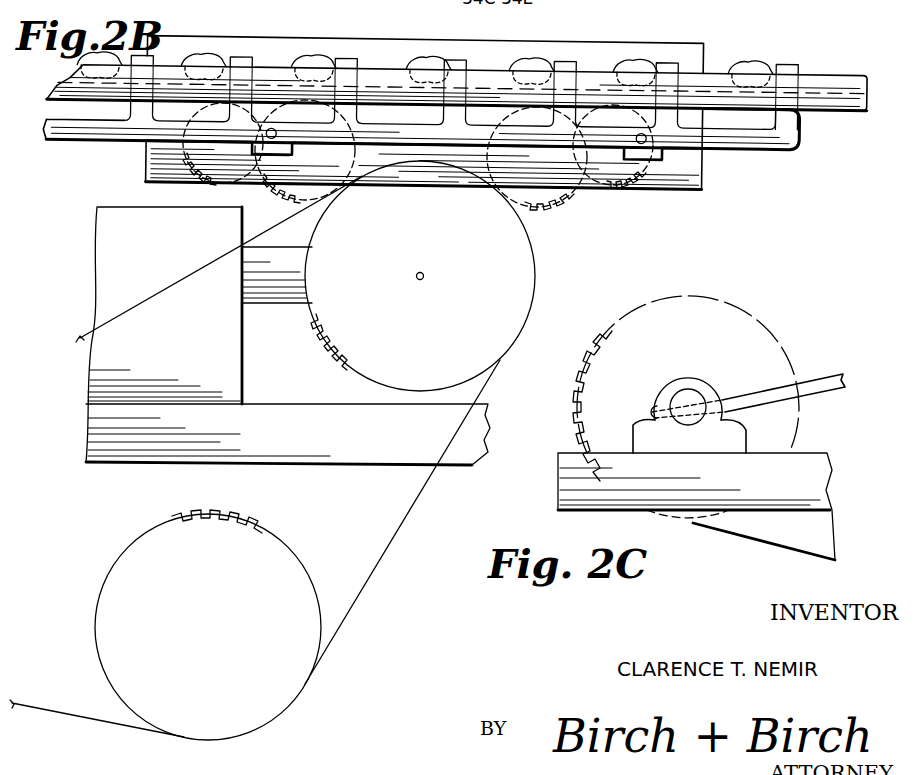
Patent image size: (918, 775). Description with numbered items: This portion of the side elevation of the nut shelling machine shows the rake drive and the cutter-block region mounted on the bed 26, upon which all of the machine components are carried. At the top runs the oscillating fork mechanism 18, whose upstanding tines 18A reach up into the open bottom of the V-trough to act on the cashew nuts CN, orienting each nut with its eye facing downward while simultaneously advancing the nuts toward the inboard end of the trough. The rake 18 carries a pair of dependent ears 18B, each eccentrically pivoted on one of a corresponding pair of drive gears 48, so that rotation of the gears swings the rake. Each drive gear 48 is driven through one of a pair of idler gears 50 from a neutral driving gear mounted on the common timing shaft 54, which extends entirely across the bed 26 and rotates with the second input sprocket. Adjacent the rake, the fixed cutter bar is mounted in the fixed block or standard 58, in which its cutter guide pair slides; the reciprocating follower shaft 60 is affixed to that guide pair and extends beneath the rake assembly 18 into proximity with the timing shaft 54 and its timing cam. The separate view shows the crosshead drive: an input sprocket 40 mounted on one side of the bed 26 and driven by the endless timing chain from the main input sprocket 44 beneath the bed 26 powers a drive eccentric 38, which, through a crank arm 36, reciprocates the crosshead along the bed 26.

In FIG. 2B, the oscillating fork mechanism 18 is at (777, 140).
In FIG. 2B, the upstanding tines 18A is at (782, 66).
In FIG. 2B, the dependent ears 18B is at (683, 160).
In FIG. 2B, the cashew nuts CN is at (428, 50).
In FIG. 2B, the bed 26 is at (324, 445).
In FIG. 2C, the bed 26 is at (750, 483).
In FIG. 2C, the crank arms 36 is at (805, 378).
In FIG. 2C, the drive eccentric 38 is at (694, 376).
In FIG. 2C, the input sprocket 40 is at (645, 320).
In FIG. 2B, the main input sprocket 44 is at (235, 664).
In FIG. 2B, the drive gears 48 is at (213, 150).
In FIG. 2B, the idler gears 50 is at (285, 174).
In FIG. 2B, the timing shaft 54 is at (436, 262).
In FIG. 2B, the fixed block or standard 58 is at (172, 259).
In FIG. 2B, the reciprocating follower shaft 60 is at (296, 280).